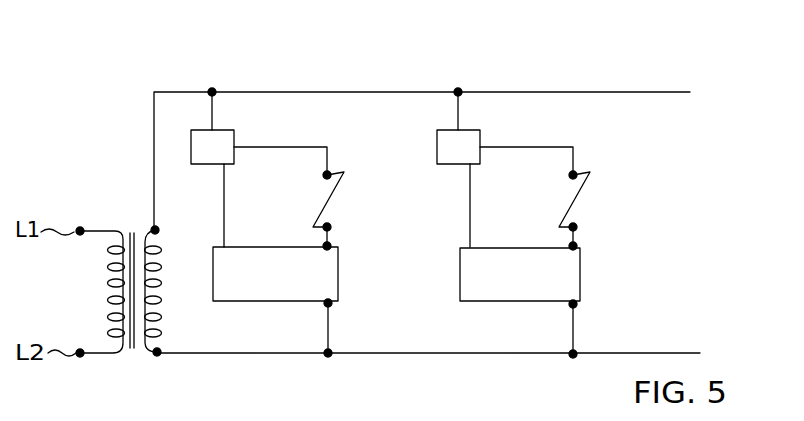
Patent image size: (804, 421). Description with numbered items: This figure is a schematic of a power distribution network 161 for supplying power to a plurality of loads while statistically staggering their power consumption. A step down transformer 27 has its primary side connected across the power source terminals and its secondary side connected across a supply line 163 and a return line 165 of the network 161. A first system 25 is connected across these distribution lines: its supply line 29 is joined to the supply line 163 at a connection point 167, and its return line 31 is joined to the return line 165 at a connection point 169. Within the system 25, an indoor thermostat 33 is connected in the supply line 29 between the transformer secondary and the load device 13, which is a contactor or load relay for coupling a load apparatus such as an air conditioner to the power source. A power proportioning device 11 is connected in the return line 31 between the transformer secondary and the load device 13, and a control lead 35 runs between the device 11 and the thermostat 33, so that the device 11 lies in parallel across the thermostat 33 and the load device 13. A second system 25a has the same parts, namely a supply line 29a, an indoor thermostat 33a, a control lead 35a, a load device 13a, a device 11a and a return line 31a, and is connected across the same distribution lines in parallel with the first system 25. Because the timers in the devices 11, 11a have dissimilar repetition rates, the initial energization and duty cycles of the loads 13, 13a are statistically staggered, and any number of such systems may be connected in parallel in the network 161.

The power distribution network 161 is at (407, 67).
The supply line 163 is at (154, 118).
The return line 165 is at (222, 353).
The connection point 167 is at (212, 92).
The connection point 169 is at (328, 355).
The transformer 27 is at (132, 362).
The supply line 29 is at (213, 110).
The supply line 29a is at (483, 126).
The indoor thermostat 33 is at (207, 164).
The indoor thermostat 33a is at (490, 173).
The control lead 35 is at (224, 220).
The control lead 35a is at (501, 205).
The load device 13 is at (333, 200).
The load device 13a is at (599, 210).
The device 11 is at (278, 282).
The device 11a is at (520, 274).
The system 25 is at (377, 230).
The system 25a is at (618, 248).
The return line 31 is at (328, 327).
The return line 31a is at (606, 329).